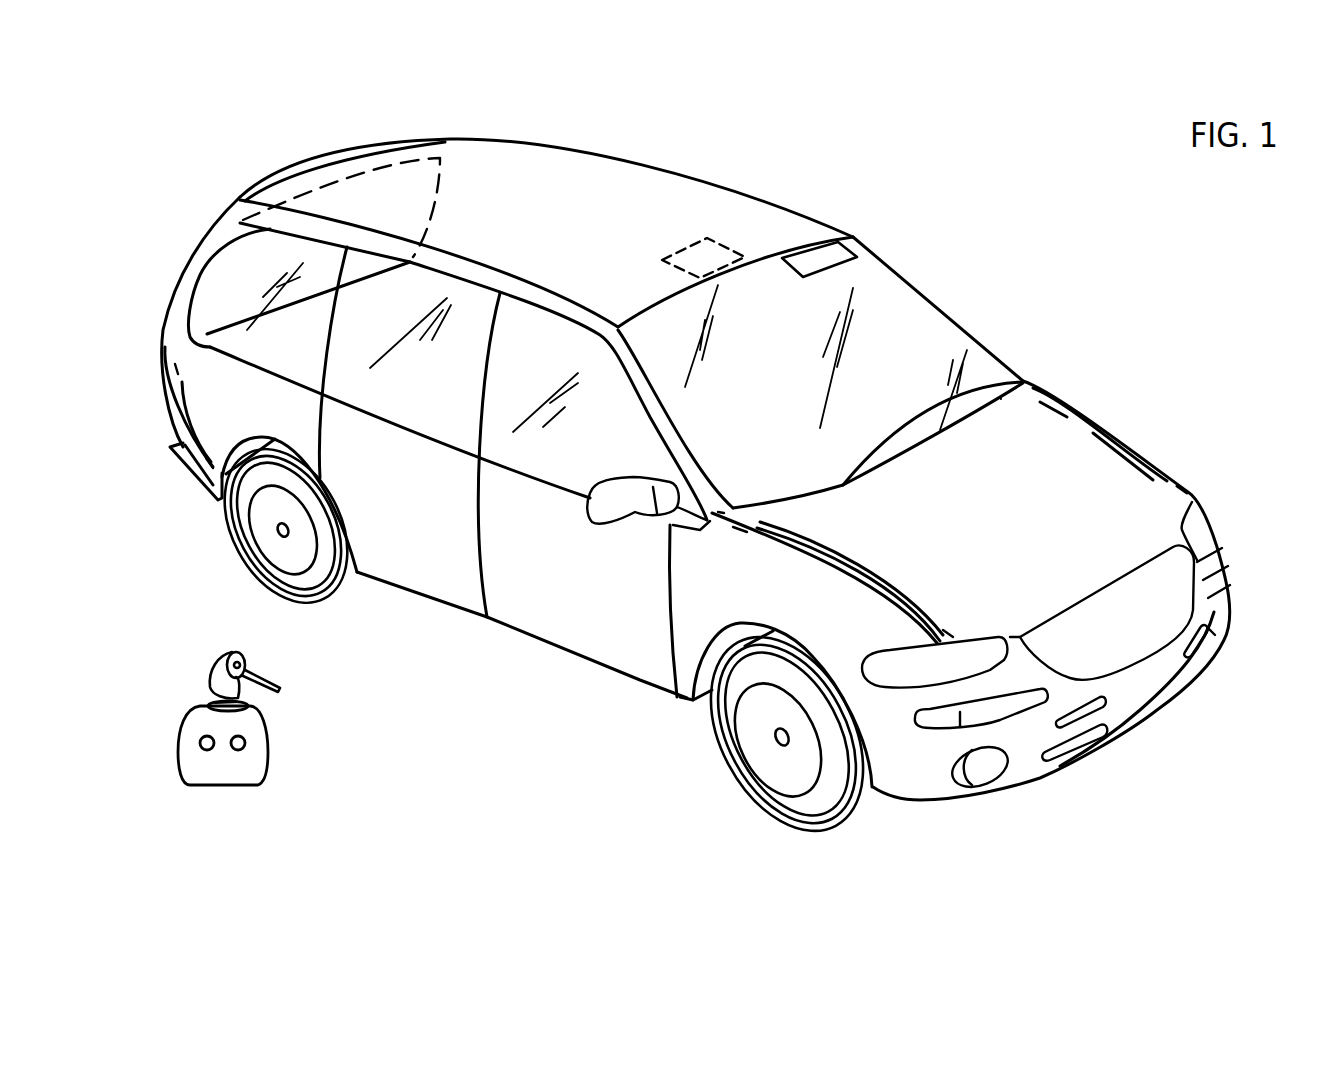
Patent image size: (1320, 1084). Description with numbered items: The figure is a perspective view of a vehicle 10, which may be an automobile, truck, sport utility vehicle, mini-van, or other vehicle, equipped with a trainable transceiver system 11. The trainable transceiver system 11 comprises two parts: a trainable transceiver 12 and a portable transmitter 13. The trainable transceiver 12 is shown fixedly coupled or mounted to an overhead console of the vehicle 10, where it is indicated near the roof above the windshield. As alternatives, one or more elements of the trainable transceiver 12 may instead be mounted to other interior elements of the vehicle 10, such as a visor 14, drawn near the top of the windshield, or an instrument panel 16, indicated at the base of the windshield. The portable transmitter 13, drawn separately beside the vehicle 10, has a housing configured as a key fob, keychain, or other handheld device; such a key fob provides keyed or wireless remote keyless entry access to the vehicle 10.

The vehicle 10 is at (962, 259).
The trainable transceiver system 11 is at (285, 748).
The trainable transceiver 12 is at (720, 243).
The portable transmitter 13 is at (197, 725).
The visor 14 is at (847, 250).
The instrument panel 16 is at (1000, 397).